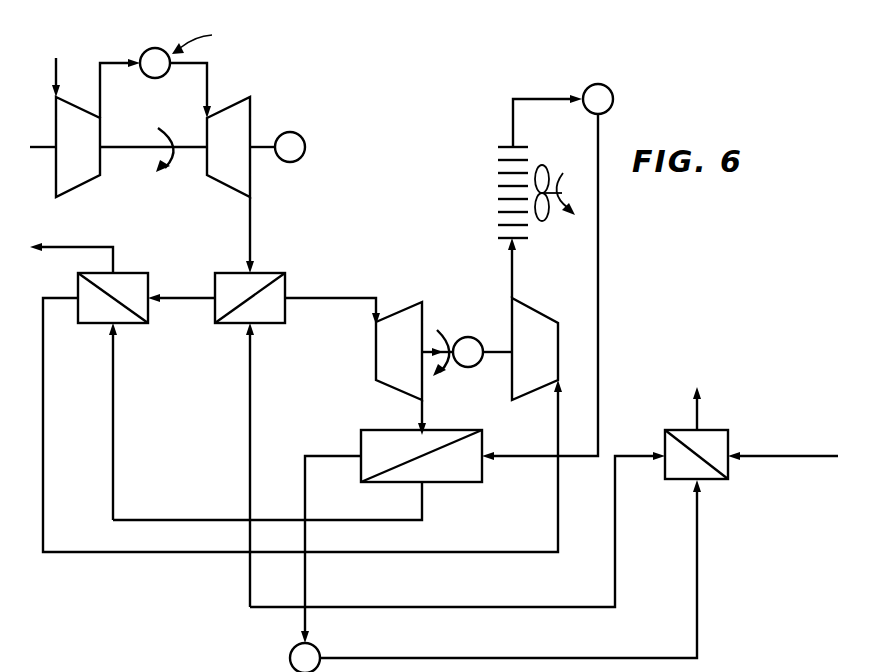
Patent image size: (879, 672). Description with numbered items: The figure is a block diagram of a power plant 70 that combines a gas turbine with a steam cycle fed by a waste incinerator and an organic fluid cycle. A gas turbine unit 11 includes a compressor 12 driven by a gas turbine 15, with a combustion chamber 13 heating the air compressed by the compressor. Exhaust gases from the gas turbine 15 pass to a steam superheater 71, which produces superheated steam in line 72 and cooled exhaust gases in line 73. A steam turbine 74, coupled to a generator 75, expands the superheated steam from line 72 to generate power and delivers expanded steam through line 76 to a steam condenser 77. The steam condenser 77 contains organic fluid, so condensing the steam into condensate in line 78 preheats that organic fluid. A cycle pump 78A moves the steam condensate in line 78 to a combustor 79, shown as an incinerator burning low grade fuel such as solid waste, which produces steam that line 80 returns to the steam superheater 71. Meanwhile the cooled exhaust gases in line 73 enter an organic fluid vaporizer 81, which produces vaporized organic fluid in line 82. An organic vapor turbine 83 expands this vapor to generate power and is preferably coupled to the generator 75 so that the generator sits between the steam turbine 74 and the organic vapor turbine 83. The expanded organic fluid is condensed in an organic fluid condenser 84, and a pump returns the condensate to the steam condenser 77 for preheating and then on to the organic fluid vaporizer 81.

The gas turbine unit 11 is at (172, 182).
The compressor 12 is at (70, 100).
The combustion chamber 13 is at (158, 50).
The gas turbine 15 is at (245, 100).
The power plant 70 is at (647, 276).
The steam superheater 71 is at (289, 272).
The superheated steam line 72 is at (316, 306).
The cooled exhaust gas line 73 is at (183, 304).
The steam turbine 74 is at (413, 306).
The generator 75 is at (470, 338).
The expanded steam line 76 is at (418, 414).
The steam condenser 77 is at (482, 435).
The steam condensate line 78 is at (303, 502).
The cycle pump 78A is at (290, 652).
The combustor 79 is at (722, 430).
The steam line 80 is at (525, 608).
The organic fluid vaporizer 81 is at (151, 291).
The vaporized organic fluid line 82 is at (43, 433).
The organic vapor turbine 83 is at (598, 84).
The organic fluid condenser 84 is at (488, 162).